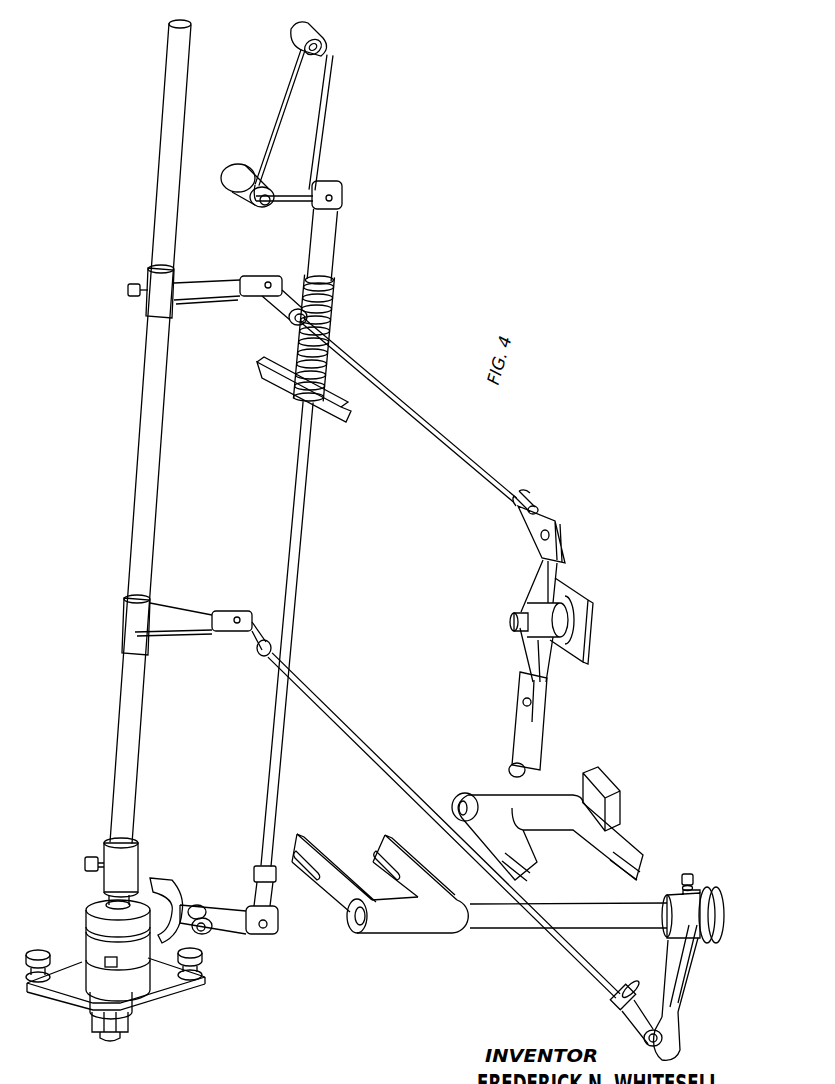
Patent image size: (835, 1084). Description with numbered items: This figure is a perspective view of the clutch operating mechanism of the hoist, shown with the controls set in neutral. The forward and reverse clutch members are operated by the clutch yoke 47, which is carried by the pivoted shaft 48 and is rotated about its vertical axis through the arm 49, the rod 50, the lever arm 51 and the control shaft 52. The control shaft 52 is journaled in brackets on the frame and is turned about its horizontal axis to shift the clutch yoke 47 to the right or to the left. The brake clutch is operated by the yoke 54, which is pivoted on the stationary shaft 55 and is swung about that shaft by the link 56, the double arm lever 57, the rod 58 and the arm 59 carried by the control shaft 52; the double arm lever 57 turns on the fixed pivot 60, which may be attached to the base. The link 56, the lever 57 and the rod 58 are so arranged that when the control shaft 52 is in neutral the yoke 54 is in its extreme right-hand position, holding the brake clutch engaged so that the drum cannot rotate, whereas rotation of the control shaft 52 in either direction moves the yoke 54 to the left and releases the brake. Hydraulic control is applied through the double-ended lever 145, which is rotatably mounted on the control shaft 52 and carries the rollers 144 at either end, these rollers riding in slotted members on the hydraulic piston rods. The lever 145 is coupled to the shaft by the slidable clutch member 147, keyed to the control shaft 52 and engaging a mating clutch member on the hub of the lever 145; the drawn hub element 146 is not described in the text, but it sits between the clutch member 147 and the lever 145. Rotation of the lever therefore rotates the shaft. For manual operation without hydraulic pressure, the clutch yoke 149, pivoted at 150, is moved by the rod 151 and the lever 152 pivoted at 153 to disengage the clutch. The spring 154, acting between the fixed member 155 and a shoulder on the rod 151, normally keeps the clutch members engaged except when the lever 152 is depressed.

The clutch yoke 47 is at (380, 883).
The pivoted shaft 48 is at (511, 928).
The arm 49 is at (667, 970).
The rod 50 is at (386, 757).
The lever arm 51 is at (185, 625).
The control shaft 52 is at (150, 432).
The yoke 54 is at (490, 803).
The stationary shaft 55 is at (584, 775).
The link 56 is at (521, 742).
The double arm lever 57 is at (538, 585).
The rod 58 is at (430, 426).
The arm 59 is at (212, 288).
The fixed pivot 60 is at (513, 613).
The rollers 144 is at (38, 950).
The double-ended lever 145 is at (160, 997).
The drum 146 is at (87, 932).
The slidable clutch member 147 is at (108, 895).
The clutch yoke 149 is at (150, 878).
The pivot 150 is at (207, 908).
The rod 151 is at (340, 262).
The lever 152 is at (293, 111).
The pivot 153 is at (252, 204).
The spring 154 is at (328, 368).
The fixed member 155 is at (272, 364).